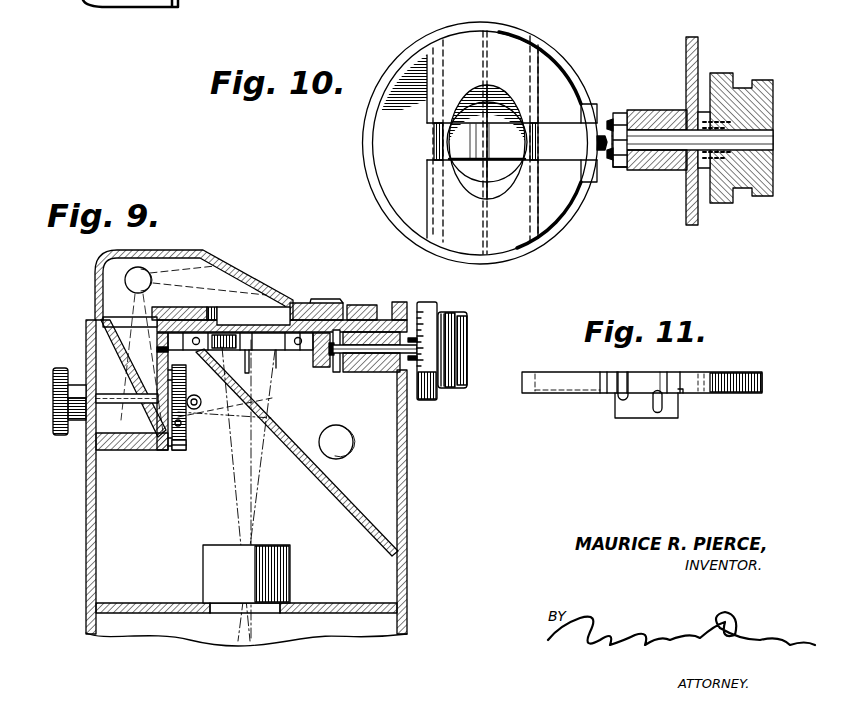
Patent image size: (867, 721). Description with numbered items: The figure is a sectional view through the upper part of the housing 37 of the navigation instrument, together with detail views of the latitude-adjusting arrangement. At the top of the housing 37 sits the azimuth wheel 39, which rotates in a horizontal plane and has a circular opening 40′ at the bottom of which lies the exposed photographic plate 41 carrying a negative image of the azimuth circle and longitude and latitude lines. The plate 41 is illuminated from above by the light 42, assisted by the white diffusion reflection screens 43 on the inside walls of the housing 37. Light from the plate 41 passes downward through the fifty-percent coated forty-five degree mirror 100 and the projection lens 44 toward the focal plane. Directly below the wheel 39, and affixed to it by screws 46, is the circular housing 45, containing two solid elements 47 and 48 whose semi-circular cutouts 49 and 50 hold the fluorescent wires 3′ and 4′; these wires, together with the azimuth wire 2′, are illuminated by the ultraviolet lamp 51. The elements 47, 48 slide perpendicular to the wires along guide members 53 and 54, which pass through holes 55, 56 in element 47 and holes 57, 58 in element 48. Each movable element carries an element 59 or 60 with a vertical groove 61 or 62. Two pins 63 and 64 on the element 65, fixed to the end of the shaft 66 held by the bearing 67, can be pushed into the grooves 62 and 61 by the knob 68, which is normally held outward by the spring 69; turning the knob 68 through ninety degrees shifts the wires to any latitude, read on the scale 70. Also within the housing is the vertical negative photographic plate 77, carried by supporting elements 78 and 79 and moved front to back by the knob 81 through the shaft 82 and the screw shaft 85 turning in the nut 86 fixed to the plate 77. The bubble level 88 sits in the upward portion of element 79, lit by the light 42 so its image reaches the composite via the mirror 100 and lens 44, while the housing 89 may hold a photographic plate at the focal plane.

In FIG. 9, the azimuth wire 2′ is at (249, 346).
In FIG. 10, the azimuth wire 2′ is at (489, 142).
In FIG. 10, the fluorescent wire 3′ is at (466, 127).
In FIG. 9, the fluorescent wire 4′ is at (277, 342).
In FIG. 10, the fluorescent wire 4′ is at (477, 126).
In FIG. 9, the housing 37 is at (409, 428).
In FIG. 10, the housing 37 is at (686, 219).
In FIG. 9, the azimuth wheel 39 is at (328, 302).
In FIG. 9, the circular opening 40′ is at (272, 311).
In FIG. 9, the photographic plate 41 is at (259, 329).
In FIG. 9, the light 42 is at (140, 267).
In FIG. 9, the diffusion reflection screens 43 is at (238, 273).
In FIG. 9, the projection lens 44 is at (284, 580).
In FIG. 10, the circular housing 45 is at (363, 137).
In FIG. 11, the circular housing 45 is at (527, 394).
In FIG. 9, the screws 46 is at (191, 316).
In FIG. 9, the solid element 47 is at (294, 352).
In FIG. 10, the solid element 47 is at (510, 47).
In FIG. 10, the solid element 48 is at (517, 236).
In FIG. 10, the semi-circular cutout 49 is at (505, 97).
In FIG. 10, the semi-circular cutout 50 is at (462, 185).
In FIG. 9, the ultraviolet lamp 51 is at (351, 437).
In FIG. 10, the guide member 53 is at (433, 141).
In FIG. 10, the guide member 54 is at (539, 141).
In FIG. 10, the hole 55 is at (447, 62).
In FIG. 10, the hole 56 is at (528, 62).
In FIG. 10, the hole 57 is at (434, 197).
In FIG. 10, the hole 58 is at (538, 197).
In FIG. 9, the element 59 is at (336, 374).
In FIG. 10, the element 59 is at (590, 106).
In FIG. 11, the element 59 is at (637, 410).
In FIG. 9, the element 60 is at (322, 368).
In FIG. 10, the element 60 is at (590, 171).
In FIG. 11, the element 60 is at (658, 378).
In FIG. 11, the vertical groove 61 is at (657, 414).
In FIG. 10, the vertical groove 62 is at (599, 149).
In FIG. 11, the vertical groove 62 is at (626, 381).
In FIG. 9, the pin 63 is at (338, 357).
In FIG. 10, the pin 63 is at (610, 162).
In FIG. 10, the pin 64 is at (618, 112).
In FIG. 10, the element 65 is at (627, 166).
In FIG. 9, the shaft 66 is at (363, 353).
In FIG. 10, the shaft 66 is at (640, 122).
In FIG. 9, the bearing 67 is at (385, 361).
In FIG. 10, the bearing 67 is at (661, 170).
In FIG. 9, the knob 68 is at (452, 312).
In FIG. 10, the knob 68 is at (752, 88).
In FIG. 9, the spring 69 is at (414, 366).
In FIG. 10, the spring 69 is at (700, 118).
In FIG. 9, the scale 70 is at (427, 302).
In FIG. 9, the vertical negative photographic plate 77 is at (187, 393).
In FIG. 9, the supporting element 78 is at (169, 359).
In FIG. 9, the supporting element 79 is at (120, 450).
In FIG. 9, the knob 81 is at (60, 368).
In FIG. 9, the shaft 82 is at (115, 404).
In FIG. 9, the screw shaft 85 is at (190, 410).
In FIG. 9, the nut 86 is at (201, 401).
In FIG. 9, the bubble level 88 is at (188, 431).
In FIG. 9, the housing 89 is at (133, 8).
In FIG. 9, the 45° mirror 100 is at (263, 415).